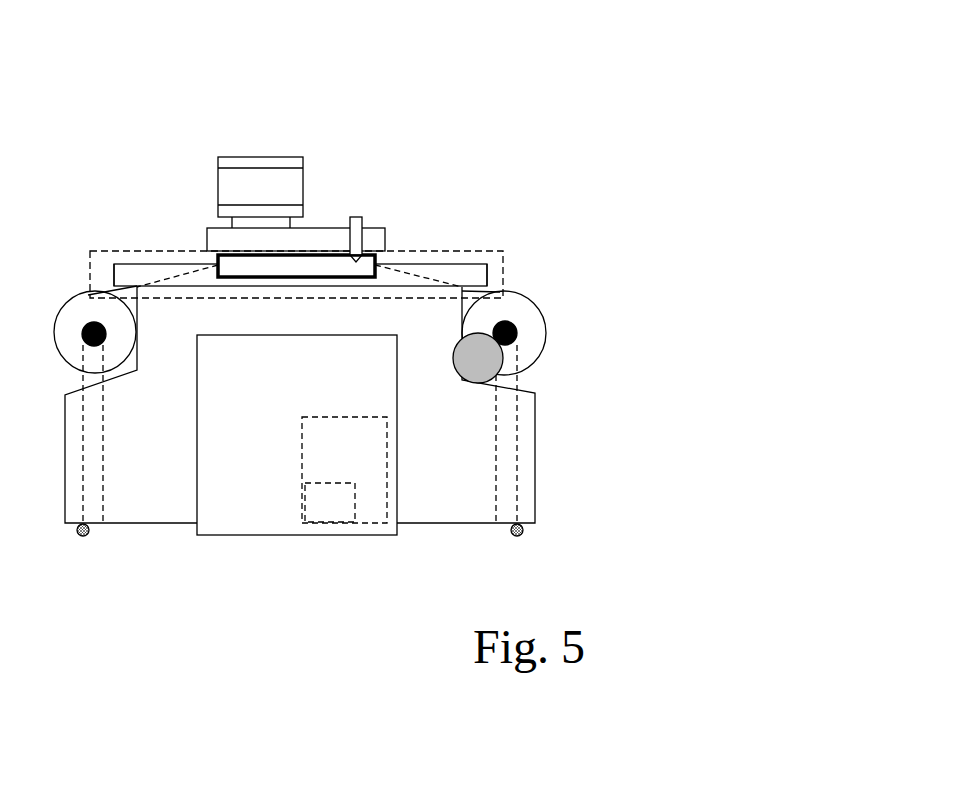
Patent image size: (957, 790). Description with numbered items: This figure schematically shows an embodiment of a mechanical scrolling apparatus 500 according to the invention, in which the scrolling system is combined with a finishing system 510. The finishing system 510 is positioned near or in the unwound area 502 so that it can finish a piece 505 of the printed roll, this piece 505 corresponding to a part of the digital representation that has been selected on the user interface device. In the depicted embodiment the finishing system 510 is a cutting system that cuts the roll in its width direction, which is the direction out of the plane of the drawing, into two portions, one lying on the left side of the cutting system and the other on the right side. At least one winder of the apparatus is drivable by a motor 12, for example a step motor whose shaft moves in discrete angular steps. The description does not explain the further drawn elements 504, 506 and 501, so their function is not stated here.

The liner application apparatus 500 is at (586, 488).
The frame 502 is at (505, 250).
The left support member 504 is at (168, 277).
The right support member 506 is at (405, 275).
The platen 505 is at (267, 264).
The heating bar 501 is at (328, 277).
The sensor 510 is at (358, 217).
The liner roll 12 is at (472, 377).